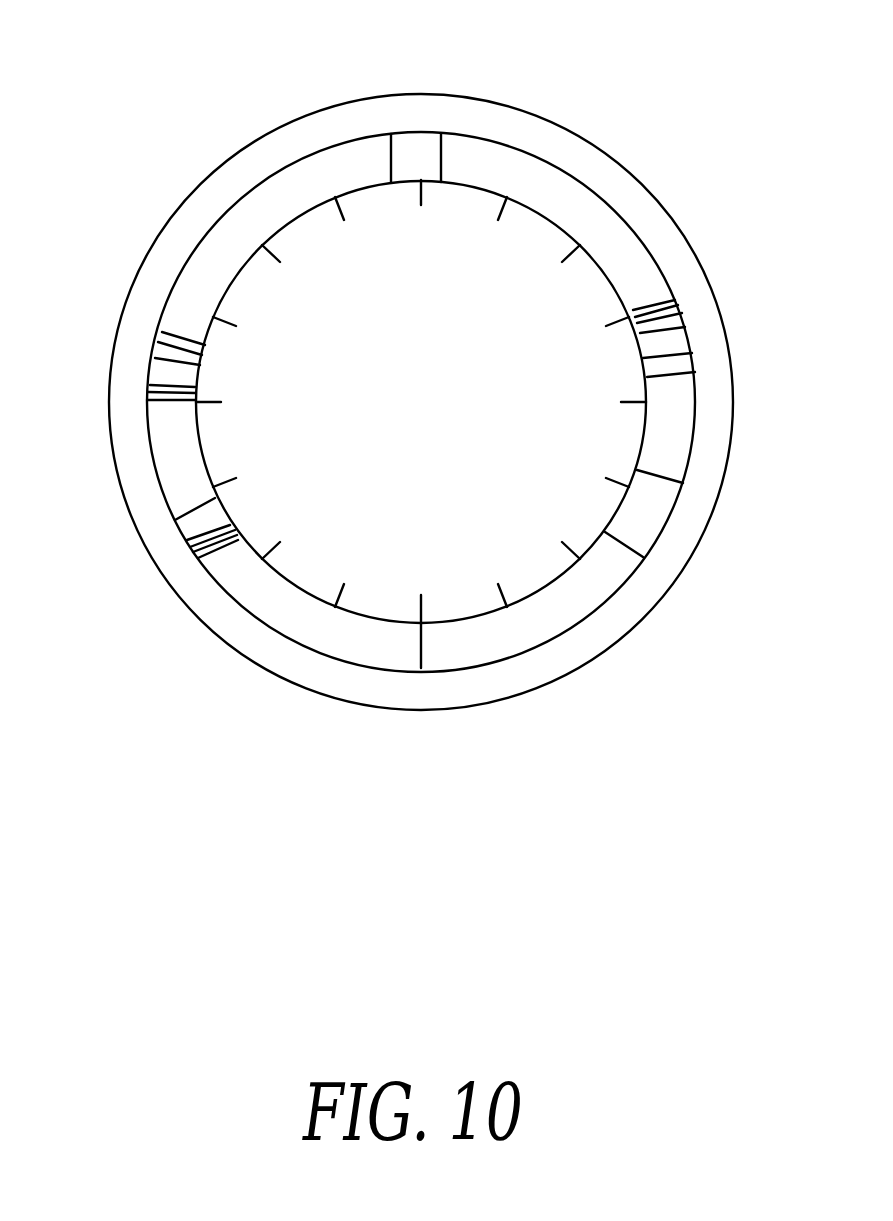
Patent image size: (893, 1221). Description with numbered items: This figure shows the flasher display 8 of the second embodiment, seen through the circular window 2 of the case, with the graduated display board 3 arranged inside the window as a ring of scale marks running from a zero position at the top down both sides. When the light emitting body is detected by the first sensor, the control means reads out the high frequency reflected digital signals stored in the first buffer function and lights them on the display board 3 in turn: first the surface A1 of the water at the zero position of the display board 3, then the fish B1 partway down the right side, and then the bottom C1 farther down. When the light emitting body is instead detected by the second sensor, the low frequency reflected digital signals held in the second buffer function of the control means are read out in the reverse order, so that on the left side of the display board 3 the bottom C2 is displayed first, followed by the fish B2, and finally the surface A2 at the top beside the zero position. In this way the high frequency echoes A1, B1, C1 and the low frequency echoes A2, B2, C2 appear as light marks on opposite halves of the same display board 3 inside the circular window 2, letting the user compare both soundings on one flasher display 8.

The circular window 2 is at (277, 190).
The display board 3 is at (522, 223).
The flasher display 8 is at (170, 222).
The surface of the water (high frequency) A1 is at (427, 143).
The surface of the water (low frequency) A2 is at (405, 143).
The fish (high frequency) B1 is at (675, 343).
The fish (low frequency) B2 is at (165, 373).
The bottom (high frequency) C1 is at (650, 517).
The bottom (low frequency) C2 is at (202, 523).